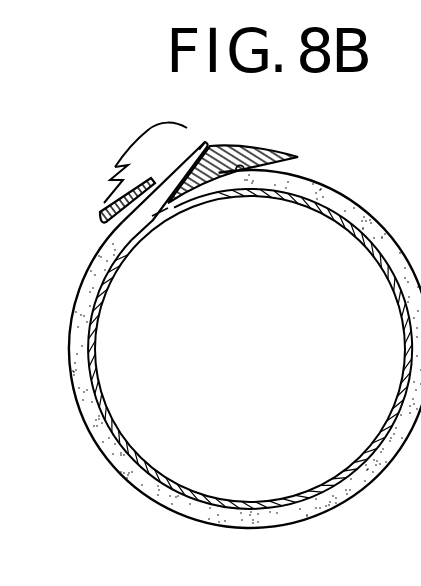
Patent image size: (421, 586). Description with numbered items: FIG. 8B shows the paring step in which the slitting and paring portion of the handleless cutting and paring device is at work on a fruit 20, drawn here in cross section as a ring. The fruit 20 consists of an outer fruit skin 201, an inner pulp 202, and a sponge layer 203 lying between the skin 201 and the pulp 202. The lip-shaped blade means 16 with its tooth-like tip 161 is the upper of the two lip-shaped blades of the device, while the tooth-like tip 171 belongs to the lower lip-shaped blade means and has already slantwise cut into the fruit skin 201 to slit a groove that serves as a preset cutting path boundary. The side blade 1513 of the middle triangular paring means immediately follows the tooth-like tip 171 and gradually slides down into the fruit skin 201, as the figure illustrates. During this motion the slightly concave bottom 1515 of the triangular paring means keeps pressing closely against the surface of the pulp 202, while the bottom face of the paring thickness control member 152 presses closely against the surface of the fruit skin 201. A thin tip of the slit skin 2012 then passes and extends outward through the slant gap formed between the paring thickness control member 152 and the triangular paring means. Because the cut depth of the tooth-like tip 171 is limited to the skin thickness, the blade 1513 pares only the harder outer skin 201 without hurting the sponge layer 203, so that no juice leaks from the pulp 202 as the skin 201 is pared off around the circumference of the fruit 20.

The lip-shaped blade means 16 is at (136, 143).
The tooth-like tip 161 is at (109, 180).
The paring thickness control member 152 is at (102, 215).
The sponge layer 203 is at (134, 232).
The sharp blade 1513 is at (168, 214).
The concave bottom 1515 is at (243, 174).
The tooth-like tip 171 is at (160, 214).
The pulp 202 is at (278, 380).
The fruit skin 201 is at (105, 450).
The fruit 20 is at (361, 491).
The thin tip of the slit skin 2012 is at (207, 144).